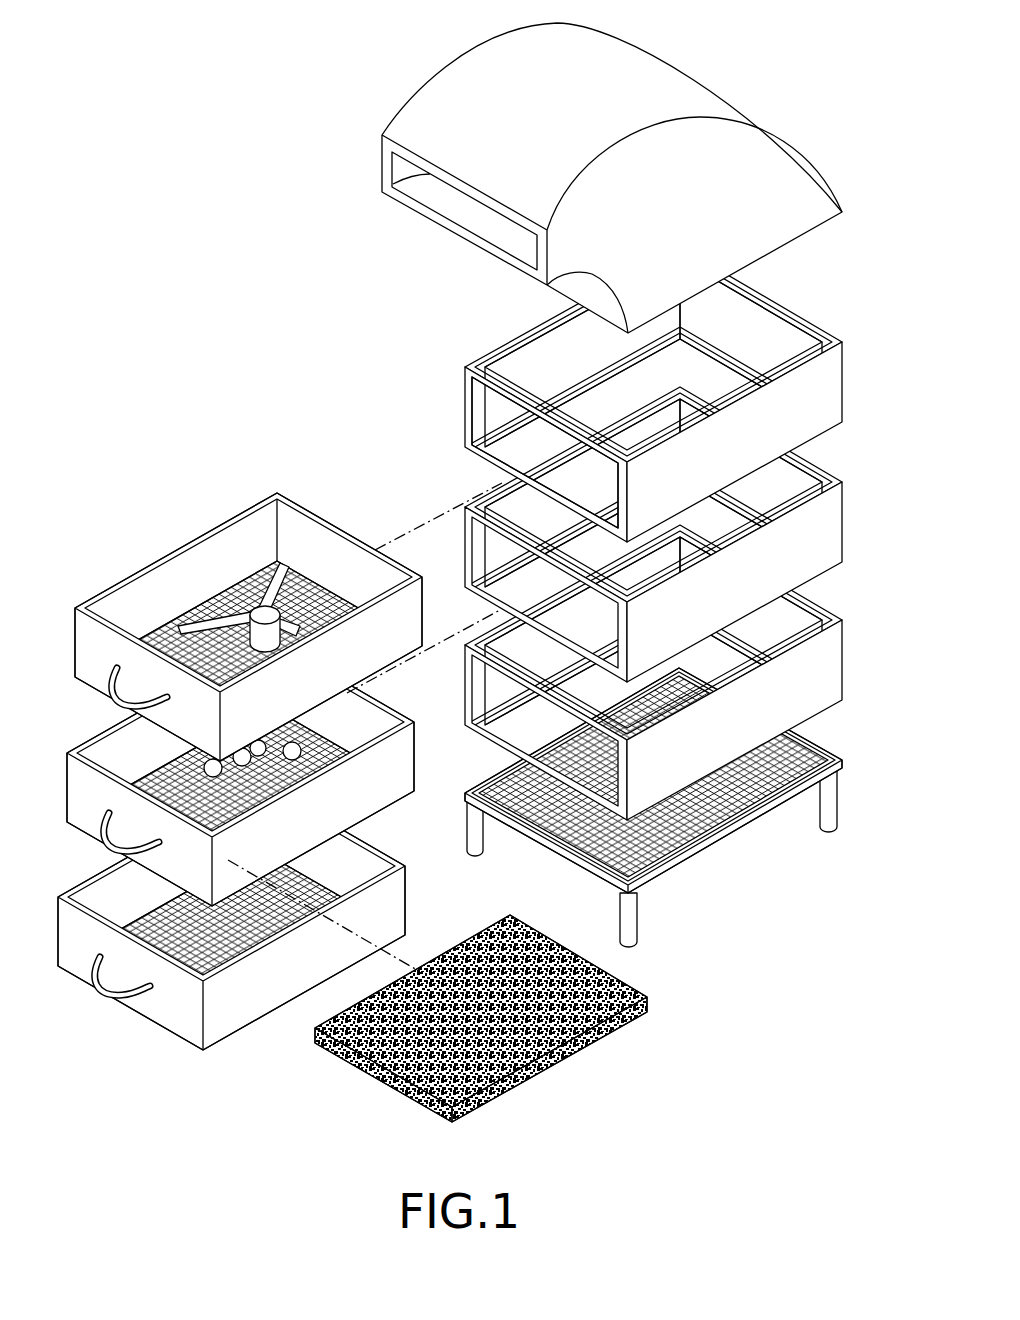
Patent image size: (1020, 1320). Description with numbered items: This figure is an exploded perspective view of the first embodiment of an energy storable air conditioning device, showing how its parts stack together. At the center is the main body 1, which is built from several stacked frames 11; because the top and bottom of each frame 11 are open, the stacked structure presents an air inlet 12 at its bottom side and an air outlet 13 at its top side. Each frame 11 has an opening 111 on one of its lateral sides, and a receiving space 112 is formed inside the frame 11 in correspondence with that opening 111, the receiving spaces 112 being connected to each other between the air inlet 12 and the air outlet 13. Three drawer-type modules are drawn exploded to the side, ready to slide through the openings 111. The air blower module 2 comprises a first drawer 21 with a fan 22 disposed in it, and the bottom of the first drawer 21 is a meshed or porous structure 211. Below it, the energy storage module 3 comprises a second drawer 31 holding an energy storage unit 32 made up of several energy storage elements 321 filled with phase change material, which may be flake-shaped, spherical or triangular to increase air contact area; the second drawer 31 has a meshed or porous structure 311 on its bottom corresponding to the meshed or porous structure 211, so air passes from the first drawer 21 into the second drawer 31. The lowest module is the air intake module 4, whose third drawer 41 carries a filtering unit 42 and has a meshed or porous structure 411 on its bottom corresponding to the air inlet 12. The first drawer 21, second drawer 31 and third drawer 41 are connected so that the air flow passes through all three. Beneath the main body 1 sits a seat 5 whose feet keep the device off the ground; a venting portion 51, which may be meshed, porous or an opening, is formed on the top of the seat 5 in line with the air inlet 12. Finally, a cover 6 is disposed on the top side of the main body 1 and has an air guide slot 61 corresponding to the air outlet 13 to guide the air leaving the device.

The main body 1 is at (627, 518).
The frame 11 is at (627, 394).
The opening 111 is at (493, 454).
The receiving space 112 is at (481, 424).
The air inlet 12 is at (545, 730).
The air outlet 13 is at (533, 345).
The air blower module 2 is at (233, 592).
The first drawer 21 is at (88, 633).
The meshed or porous structure 211 is at (219, 590).
The fan 22 is at (259, 612).
The energy storage module 3 is at (249, 772).
The second drawer 31 is at (78, 795).
The meshed or porous structure 311 is at (297, 773).
The energy storage unit 32 is at (332, 757).
The energy storage element 321 is at (300, 753).
The air intake module 4 is at (231, 934).
The third drawer 41 is at (175, 1013).
The meshed or porous structure 411 is at (222, 960).
The filtering unit 42 is at (577, 1043).
The seat 5 is at (653, 807).
The venting portion 51 is at (670, 853).
The cover 6 is at (592, 167).
The air guide slot 61 is at (430, 190).